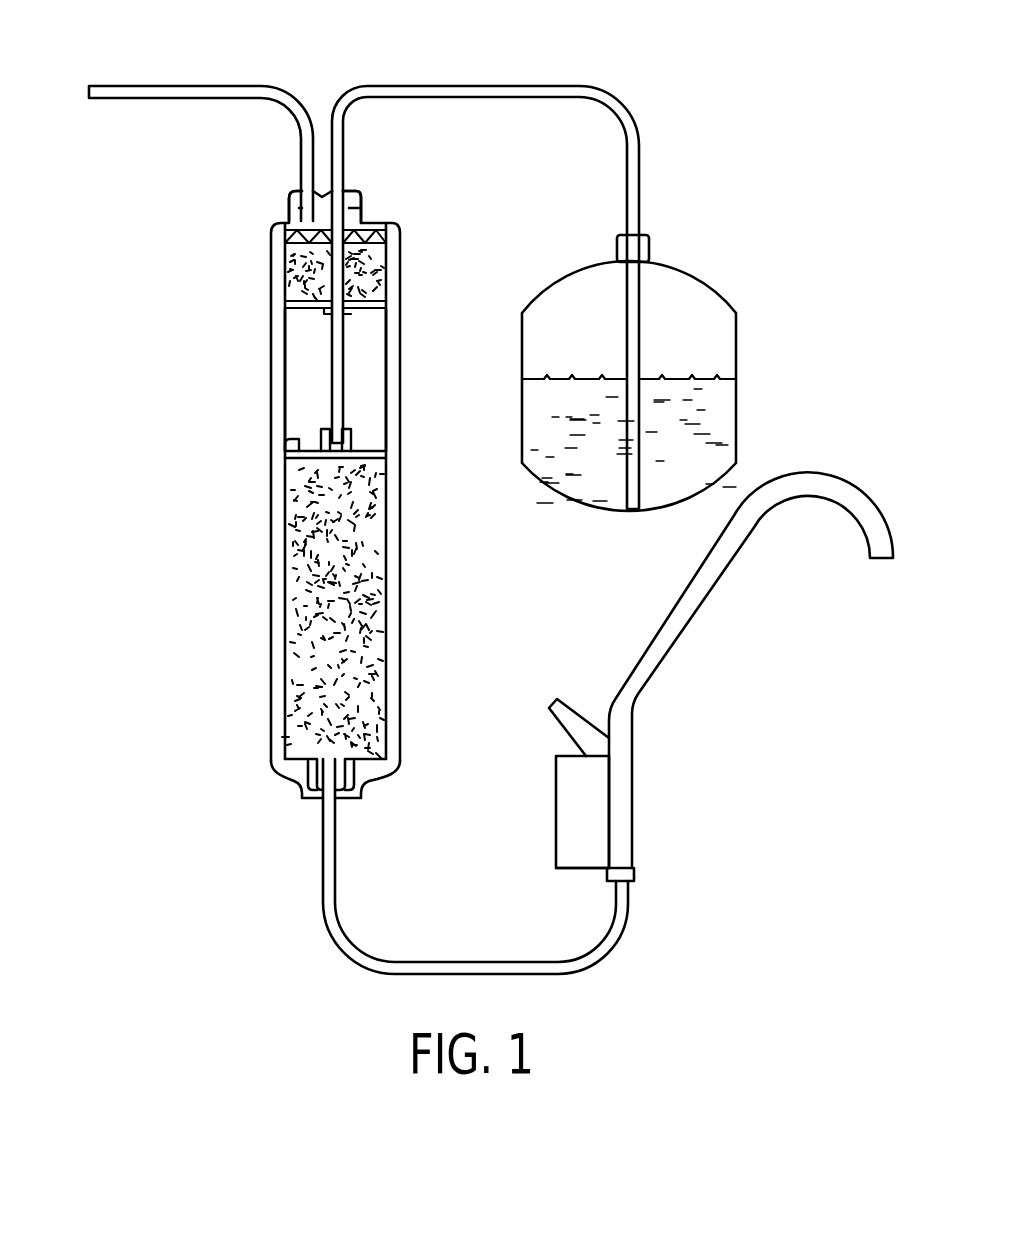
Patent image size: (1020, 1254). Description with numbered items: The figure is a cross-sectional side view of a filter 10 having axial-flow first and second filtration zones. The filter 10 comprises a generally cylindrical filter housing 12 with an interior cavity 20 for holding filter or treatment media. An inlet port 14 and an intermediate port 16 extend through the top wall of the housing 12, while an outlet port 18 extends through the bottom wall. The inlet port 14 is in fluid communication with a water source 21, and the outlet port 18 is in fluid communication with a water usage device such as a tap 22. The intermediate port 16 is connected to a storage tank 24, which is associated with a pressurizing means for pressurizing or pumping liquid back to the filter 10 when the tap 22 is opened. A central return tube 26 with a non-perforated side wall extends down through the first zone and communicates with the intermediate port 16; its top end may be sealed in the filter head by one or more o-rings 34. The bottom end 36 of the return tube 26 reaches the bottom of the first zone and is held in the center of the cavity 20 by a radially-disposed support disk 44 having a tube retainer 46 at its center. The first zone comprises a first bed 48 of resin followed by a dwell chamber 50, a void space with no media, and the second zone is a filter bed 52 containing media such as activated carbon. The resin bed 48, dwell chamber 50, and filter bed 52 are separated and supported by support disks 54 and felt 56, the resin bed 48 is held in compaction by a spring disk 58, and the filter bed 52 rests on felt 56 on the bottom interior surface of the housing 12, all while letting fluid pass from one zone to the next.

The filter 10 is at (160, 352).
The filter housing 12 is at (272, 660).
The inlet port 14 is at (292, 186).
The intermediate port 16 is at (352, 186).
The outlet port 18 is at (318, 800).
The interior cavity 20 is at (375, 540).
The water source 21 is at (194, 85).
The tap 22 is at (672, 755).
The storage tank 24 is at (733, 273).
The central return tube 26 is at (343, 370).
The o-rings 34 is at (378, 212).
The bottom end of return tube 36 is at (343, 427).
The support disk 44 is at (290, 438).
The tube retainer 46 is at (320, 434).
The first bed of resin 48 is at (295, 280).
The dwell chamber 50 is at (300, 352).
The filter bed 52 is at (300, 528).
The support disks 54 is at (393, 302).
The felt 56 is at (289, 246).
The spring disk 58 is at (287, 228).